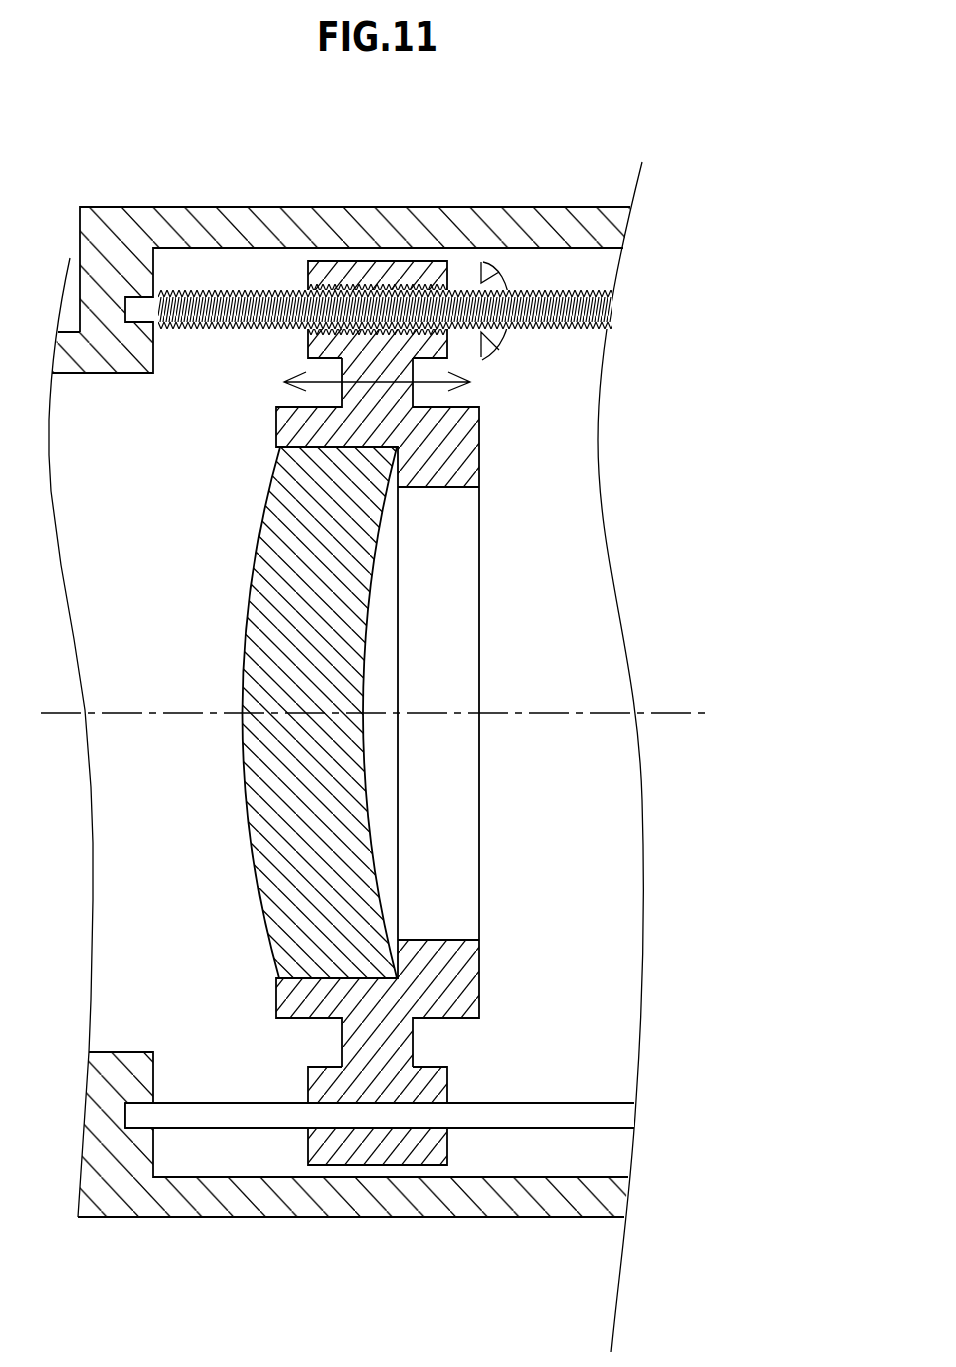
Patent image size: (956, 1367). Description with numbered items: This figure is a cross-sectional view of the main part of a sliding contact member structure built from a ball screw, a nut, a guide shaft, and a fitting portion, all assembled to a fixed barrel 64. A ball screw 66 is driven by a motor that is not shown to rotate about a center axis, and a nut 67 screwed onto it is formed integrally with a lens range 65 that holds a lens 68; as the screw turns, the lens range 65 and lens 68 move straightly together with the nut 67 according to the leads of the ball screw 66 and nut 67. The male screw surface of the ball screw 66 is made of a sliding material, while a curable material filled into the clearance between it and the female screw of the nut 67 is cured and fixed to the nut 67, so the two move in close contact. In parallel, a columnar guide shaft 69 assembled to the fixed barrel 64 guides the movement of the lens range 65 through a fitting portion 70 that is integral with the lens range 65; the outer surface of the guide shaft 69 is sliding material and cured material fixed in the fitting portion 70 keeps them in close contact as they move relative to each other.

The fixed barrel 64 is at (587, 217).
The lens range 65 is at (458, 441).
The ball screw 66 is at (223, 292).
The nut 67 is at (377, 281).
The lens 68 is at (258, 820).
The guide shaft 69 is at (222, 1115).
The fitting portion 70 is at (372, 1155).